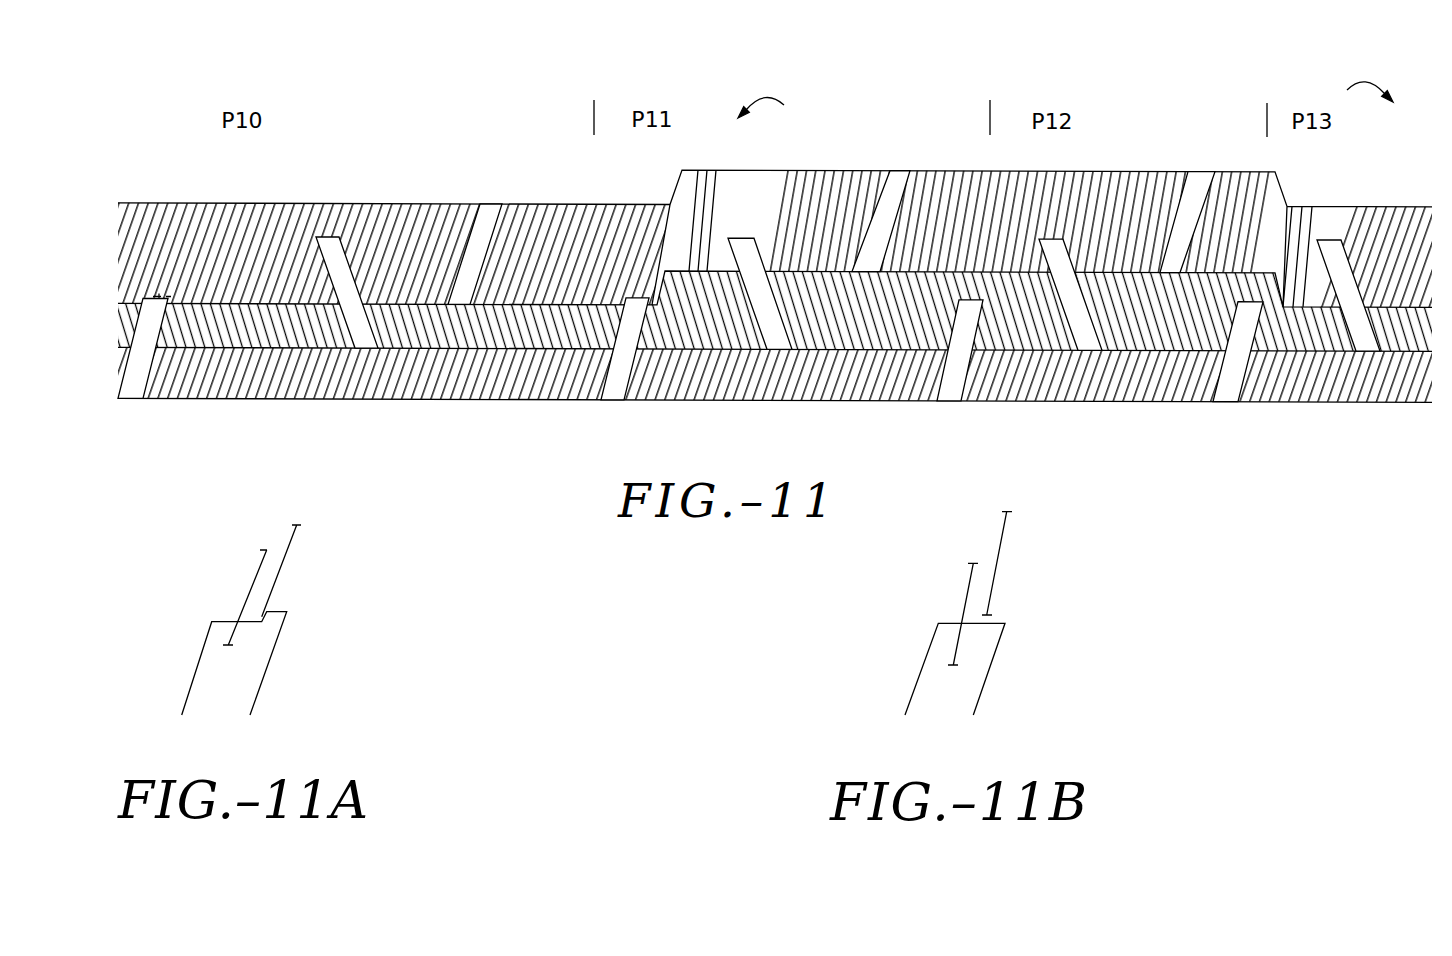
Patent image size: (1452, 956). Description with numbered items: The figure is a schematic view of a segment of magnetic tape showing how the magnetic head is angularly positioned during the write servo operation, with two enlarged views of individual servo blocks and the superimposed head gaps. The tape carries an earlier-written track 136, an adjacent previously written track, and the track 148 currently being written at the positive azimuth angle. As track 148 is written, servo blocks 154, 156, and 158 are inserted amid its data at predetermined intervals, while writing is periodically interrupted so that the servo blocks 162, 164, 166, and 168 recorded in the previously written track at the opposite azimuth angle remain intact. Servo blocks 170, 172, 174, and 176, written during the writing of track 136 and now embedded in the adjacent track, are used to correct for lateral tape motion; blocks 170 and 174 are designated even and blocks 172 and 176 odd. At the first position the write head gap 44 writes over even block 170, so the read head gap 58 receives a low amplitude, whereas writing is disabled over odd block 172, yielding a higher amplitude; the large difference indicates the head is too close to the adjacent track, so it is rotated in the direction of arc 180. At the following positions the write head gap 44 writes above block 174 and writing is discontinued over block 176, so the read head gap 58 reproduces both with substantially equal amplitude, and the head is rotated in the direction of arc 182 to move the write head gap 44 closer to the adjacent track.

In FIG. 11, the track 136 is at (1366, 403).
In FIG. 11, the track 148 is at (258, 202).
In FIG. 11, the servo block 154 is at (496, 202).
In FIG. 11, the servo block 156 is at (900, 168).
In FIG. 11, the servo block 158 is at (1201, 168).
In FIG. 11, the servo block 162 is at (330, 235).
In FIG. 11, the servo block 164 is at (743, 237).
In FIG. 11, the servo block 166 is at (1057, 238).
In FIG. 11, the servo block 168 is at (1331, 240).
In FIG. 11, the servo block 170 is at (120, 400).
In FIG. 11A, the servo block 170 is at (225, 705).
In FIG. 11, the servo block 172 is at (604, 401).
In FIG. 11, the servo block 174 is at (940, 402).
In FIG. 11B, the servo block 174 is at (948, 707).
In FIG. 11, the servo block 176 is at (1215, 403).
In FIG. 11, the arc 180 is at (763, 94).
In FIG. 11, the arc 182 is at (1367, 78).
In FIG. 11A, the write head gap 44 is at (295, 524).
In FIG. 11A, the read head gap 58 is at (263, 548).